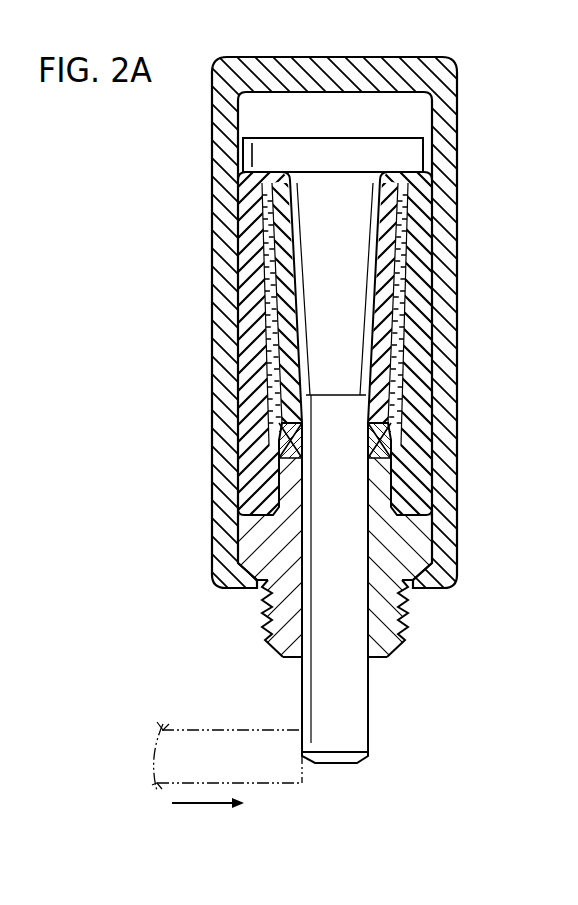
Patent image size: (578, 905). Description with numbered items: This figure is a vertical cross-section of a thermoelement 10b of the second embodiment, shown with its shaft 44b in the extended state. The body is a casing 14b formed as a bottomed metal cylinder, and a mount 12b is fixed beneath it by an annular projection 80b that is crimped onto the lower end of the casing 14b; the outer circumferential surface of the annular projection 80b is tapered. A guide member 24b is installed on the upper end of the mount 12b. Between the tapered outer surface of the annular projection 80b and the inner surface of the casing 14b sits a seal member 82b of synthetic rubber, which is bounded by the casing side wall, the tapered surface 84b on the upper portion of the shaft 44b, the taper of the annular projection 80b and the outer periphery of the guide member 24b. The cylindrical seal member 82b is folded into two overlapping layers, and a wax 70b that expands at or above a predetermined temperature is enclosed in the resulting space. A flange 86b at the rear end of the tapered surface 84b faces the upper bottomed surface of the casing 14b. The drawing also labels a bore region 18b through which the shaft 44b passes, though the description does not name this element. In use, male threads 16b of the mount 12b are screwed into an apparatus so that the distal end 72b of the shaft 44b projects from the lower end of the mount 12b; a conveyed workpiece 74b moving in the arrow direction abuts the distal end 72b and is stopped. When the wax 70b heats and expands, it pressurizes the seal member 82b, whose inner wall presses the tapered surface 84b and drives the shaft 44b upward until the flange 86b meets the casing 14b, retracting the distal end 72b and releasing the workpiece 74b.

The thermoelement 10b is at (463, 214).
The mount 12b is at (417, 546).
The casing 14b is at (450, 173).
The male threads 16b is at (405, 606).
The pipe insertion hole 18b is at (367, 618).
The guide member 24b is at (395, 445).
The shaft 44b is at (320, 603).
The wax 70b is at (265, 356).
The distal end 72b is at (343, 762).
The workpiece 74b is at (233, 738).
The annular projection 80b is at (415, 488).
The seal member 82b is at (420, 292).
The tapered surface 84b is at (320, 270).
The flange 86b is at (404, 143).